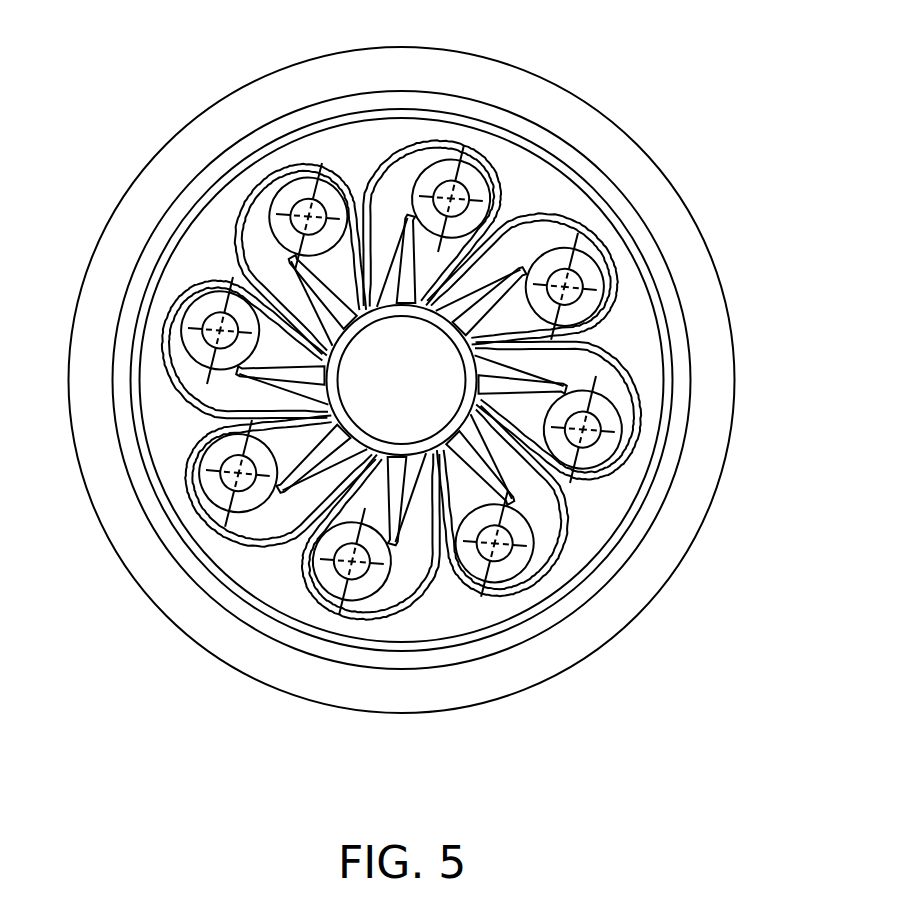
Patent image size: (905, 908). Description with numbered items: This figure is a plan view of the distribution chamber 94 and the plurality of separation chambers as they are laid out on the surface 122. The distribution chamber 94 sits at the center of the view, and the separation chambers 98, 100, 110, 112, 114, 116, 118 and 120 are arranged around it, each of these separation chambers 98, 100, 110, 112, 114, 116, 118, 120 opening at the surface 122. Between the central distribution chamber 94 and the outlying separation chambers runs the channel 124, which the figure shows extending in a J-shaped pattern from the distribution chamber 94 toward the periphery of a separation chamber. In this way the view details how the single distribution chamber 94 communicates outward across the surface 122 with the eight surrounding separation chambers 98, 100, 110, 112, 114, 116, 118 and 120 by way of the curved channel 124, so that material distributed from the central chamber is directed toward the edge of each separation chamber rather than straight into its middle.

The distribution chamber 94 is at (400, 352).
The separation chamber 98 is at (182, 307).
The separation chamber 100 is at (630, 432).
The separation chamber 110 is at (296, 192).
The separation chamber 112 is at (437, 257).
The separation chamber 114 is at (600, 250).
The separation chamber 116 is at (534, 548).
The separation chamber 118 is at (337, 595).
The separation chamber 120 is at (200, 505).
The surface 122 is at (563, 192).
The channel 124 is at (414, 578).